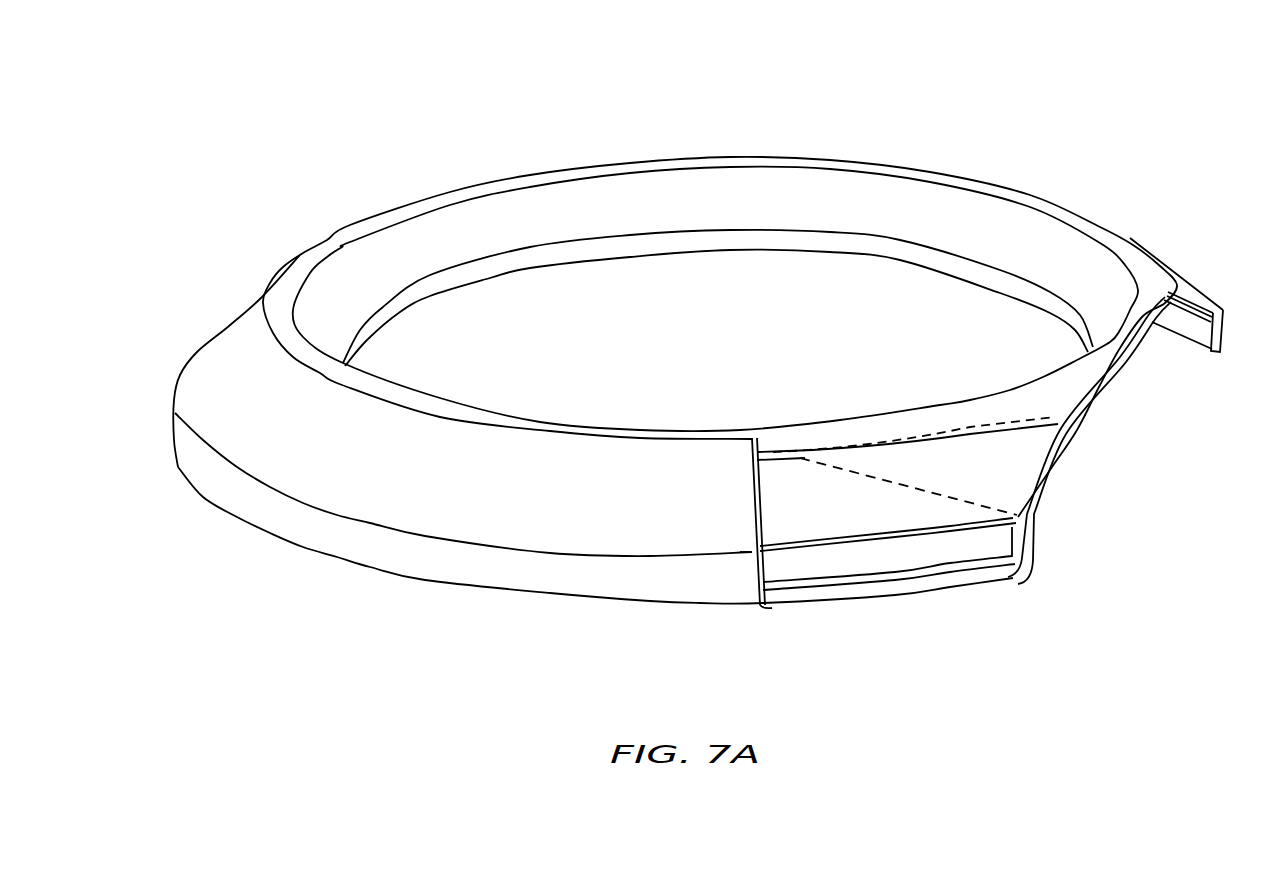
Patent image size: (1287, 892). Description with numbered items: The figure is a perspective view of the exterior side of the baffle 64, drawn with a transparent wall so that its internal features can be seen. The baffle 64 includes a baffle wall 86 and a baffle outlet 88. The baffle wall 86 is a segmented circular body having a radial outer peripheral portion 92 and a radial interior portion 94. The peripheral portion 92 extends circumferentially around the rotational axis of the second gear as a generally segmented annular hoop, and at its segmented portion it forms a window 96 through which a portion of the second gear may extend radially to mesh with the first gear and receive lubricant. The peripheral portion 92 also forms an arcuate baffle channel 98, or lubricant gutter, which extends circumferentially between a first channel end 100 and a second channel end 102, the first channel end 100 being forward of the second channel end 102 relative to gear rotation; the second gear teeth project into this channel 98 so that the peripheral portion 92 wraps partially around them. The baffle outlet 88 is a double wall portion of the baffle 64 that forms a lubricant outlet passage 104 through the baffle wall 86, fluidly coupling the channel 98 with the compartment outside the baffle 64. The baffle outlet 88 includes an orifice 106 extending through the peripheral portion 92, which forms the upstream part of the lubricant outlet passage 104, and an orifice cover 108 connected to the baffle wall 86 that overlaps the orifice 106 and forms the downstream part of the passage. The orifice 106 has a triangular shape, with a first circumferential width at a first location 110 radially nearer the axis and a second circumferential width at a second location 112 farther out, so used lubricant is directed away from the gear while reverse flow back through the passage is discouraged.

The baffle 64 is at (1035, 137).
The baffle wall 86 is at (502, 572).
The baffle outlet 88 is at (781, 606).
The radial outer peripheral portion 92 is at (410, 497).
The radial interior portion 94 is at (652, 288).
The window 96 is at (1123, 424).
The baffle channel 98 is at (1152, 340).
The first channel end 100 is at (1050, 497).
The second channel end 102 is at (1198, 328).
The lubricant outlet passage 104 is at (747, 524).
The orifice 106 is at (963, 480).
The orifice cover 108 is at (825, 525).
The first location 110 is at (1030, 536).
The second location 112 is at (1017, 515).